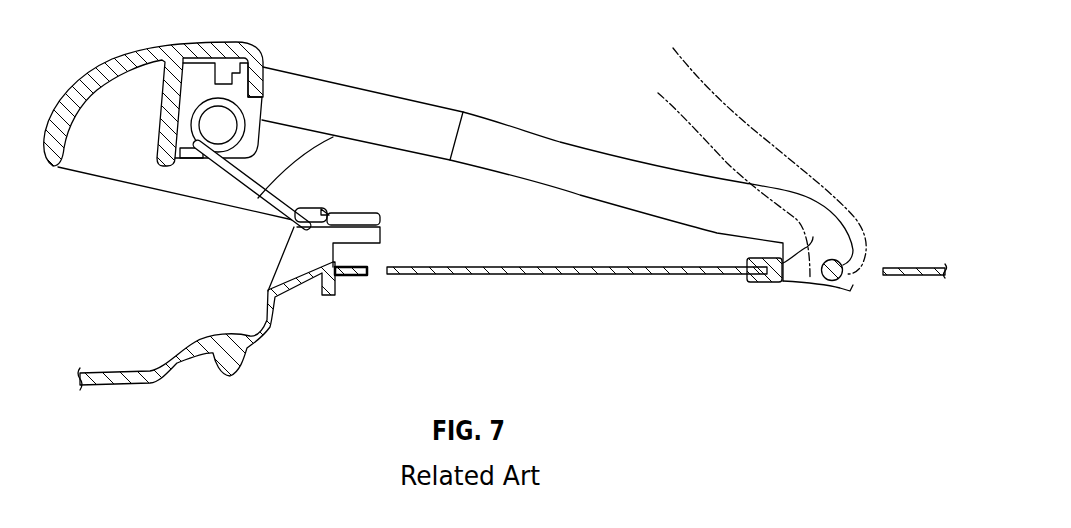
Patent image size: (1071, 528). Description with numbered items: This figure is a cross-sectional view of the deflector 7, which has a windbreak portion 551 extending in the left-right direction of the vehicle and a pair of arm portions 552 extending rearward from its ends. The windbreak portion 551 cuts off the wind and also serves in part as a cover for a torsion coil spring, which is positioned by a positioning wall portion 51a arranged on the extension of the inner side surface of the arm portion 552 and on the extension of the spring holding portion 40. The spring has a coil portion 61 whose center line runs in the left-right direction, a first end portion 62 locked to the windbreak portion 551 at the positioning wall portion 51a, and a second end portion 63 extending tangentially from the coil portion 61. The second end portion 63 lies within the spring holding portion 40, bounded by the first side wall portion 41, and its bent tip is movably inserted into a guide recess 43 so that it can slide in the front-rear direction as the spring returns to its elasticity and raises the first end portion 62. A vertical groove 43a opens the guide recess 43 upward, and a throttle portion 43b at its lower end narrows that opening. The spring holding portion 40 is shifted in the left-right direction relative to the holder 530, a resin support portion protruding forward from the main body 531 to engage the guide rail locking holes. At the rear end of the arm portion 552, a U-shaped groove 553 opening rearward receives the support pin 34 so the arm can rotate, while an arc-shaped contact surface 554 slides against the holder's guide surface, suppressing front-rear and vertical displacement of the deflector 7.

The windbreak portion 551 is at (100, 75).
The coil portion 61 is at (195, 130).
The positioning wall portion 51a is at (163, 166).
The first end portion 62 is at (190, 154).
The second end portion 63 is at (240, 176).
The deflector 7 is at (562, 169).
The arm portion 552 is at (592, 168).
The contact surface 554 is at (780, 260).
The support pin 34 is at (851, 294).
The groove 553 is at (855, 268).
The holder 530 is at (745, 277).
The main body 531 is at (577, 288).
The guide recess 43 is at (366, 218).
The vertical groove 43a is at (338, 212).
The throttle portion 43b is at (322, 212).
The first side wall portion 41 is at (277, 268).
The spring holding portion 40 is at (263, 283).